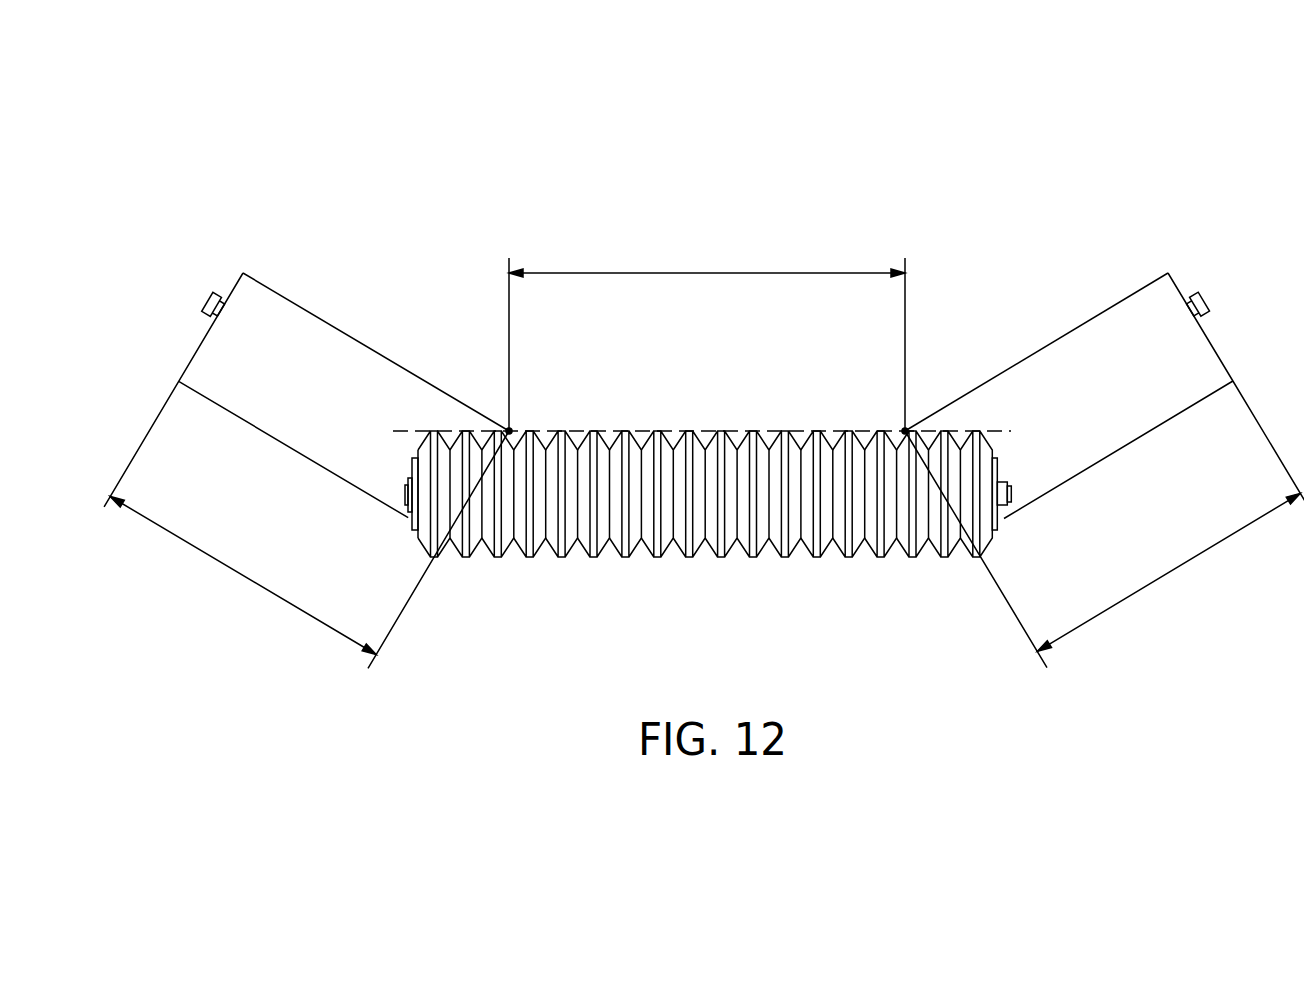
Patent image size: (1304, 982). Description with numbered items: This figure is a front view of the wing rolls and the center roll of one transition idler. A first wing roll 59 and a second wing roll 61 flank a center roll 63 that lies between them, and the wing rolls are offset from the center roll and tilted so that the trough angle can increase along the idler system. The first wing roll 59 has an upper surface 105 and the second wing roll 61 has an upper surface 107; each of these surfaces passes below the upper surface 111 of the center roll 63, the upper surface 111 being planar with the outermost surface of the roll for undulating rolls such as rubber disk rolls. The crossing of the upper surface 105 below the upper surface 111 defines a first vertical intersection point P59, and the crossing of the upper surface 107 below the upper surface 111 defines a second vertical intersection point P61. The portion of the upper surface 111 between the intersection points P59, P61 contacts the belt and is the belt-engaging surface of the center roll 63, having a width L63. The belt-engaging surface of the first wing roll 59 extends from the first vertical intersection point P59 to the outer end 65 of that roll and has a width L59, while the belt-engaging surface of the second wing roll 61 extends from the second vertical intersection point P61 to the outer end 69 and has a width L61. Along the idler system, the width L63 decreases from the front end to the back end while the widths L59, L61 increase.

The first wing roll 59 is at (283, 410).
The second wing roll 61 is at (1127, 410).
The center roll 63 is at (788, 532).
The outer end 65 is at (238, 283).
The outer end 69 is at (1174, 283).
The upper surface 105 is at (283, 294).
The upper surface 107 is at (1128, 295).
The upper surface 111 is at (630, 432).
The first vertical intersection point P59 is at (510, 430).
The second vertical intersection point P61 is at (905, 431).
The width of belt-engaging surface L59 is at (237, 577).
The width of belt-engaging surface L61 is at (1177, 575).
The width of belt-engaging surface L63 is at (675, 273).